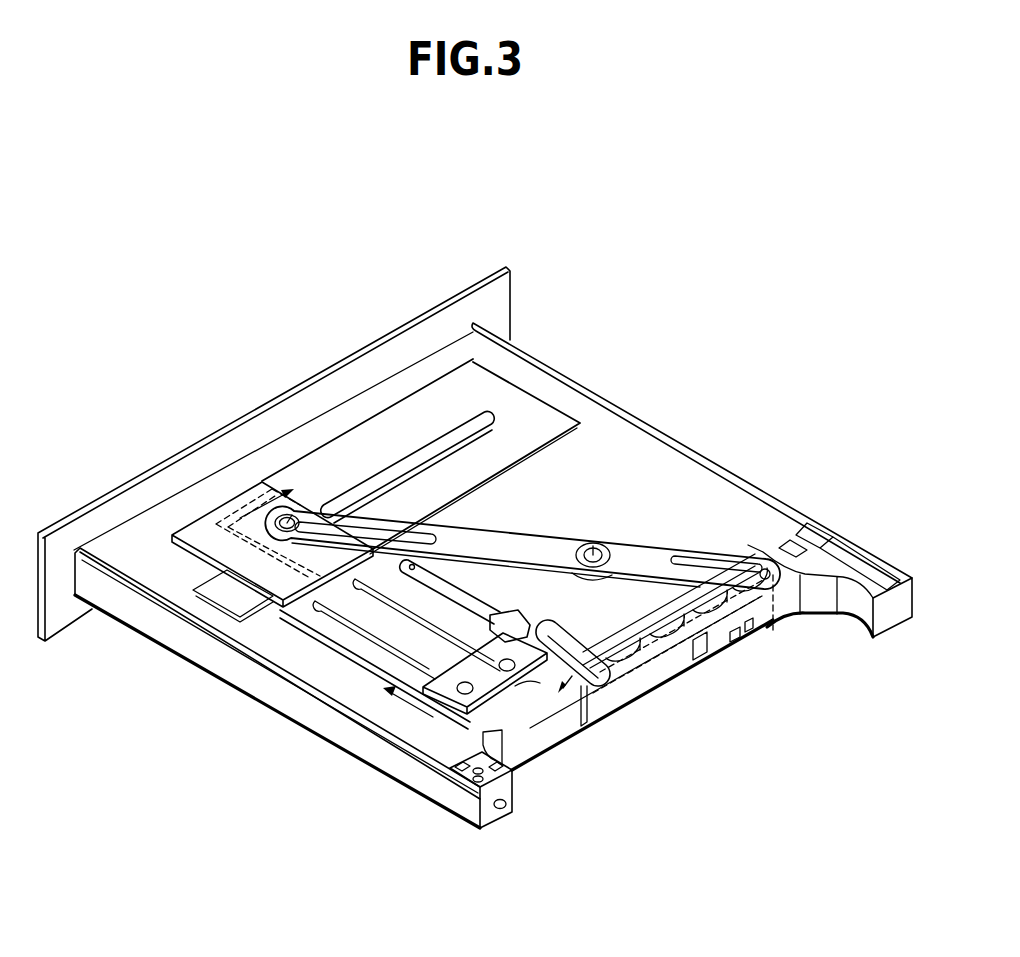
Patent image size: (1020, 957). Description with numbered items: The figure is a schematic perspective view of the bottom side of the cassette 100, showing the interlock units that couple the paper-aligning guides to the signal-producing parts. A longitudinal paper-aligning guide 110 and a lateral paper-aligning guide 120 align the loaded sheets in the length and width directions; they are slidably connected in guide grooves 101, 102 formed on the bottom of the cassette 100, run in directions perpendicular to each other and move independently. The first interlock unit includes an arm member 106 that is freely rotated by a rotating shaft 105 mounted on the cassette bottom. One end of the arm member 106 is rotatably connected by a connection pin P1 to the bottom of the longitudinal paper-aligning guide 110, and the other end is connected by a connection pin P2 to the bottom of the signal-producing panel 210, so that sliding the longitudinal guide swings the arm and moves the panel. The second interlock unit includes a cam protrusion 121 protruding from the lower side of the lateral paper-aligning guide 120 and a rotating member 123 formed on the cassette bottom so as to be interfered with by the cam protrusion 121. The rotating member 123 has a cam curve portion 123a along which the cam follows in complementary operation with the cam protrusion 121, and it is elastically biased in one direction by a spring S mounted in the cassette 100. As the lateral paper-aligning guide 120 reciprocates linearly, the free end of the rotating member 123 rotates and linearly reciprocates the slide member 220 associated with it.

The cassette 100 is at (392, 299).
The guide groove 101 is at (483, 423).
The guide groove 102 is at (243, 693).
The rotating shaft 105 is at (593, 553).
The arm member 106 is at (514, 540).
The longitudinal paper-aligning guide 110 is at (230, 527).
The lateral paper-aligning guide 120 is at (500, 678).
The cam protrusion 121 is at (600, 658).
The rotating member 123 is at (470, 602).
The cam curve portion 123a is at (506, 620).
The signal-producing panel 210 is at (773, 622).
The slide member 220 is at (663, 655).
The connection pin P1 is at (288, 522).
The connection pin P2 is at (763, 568).
The spring S is at (548, 684).